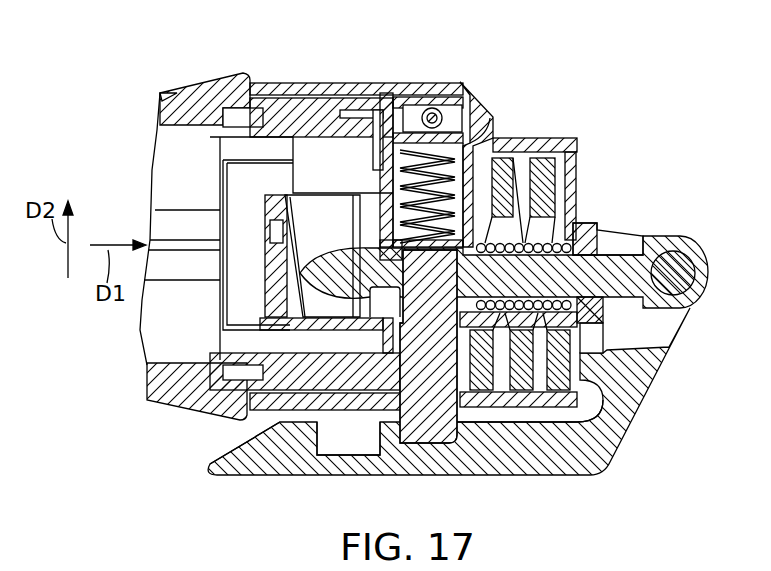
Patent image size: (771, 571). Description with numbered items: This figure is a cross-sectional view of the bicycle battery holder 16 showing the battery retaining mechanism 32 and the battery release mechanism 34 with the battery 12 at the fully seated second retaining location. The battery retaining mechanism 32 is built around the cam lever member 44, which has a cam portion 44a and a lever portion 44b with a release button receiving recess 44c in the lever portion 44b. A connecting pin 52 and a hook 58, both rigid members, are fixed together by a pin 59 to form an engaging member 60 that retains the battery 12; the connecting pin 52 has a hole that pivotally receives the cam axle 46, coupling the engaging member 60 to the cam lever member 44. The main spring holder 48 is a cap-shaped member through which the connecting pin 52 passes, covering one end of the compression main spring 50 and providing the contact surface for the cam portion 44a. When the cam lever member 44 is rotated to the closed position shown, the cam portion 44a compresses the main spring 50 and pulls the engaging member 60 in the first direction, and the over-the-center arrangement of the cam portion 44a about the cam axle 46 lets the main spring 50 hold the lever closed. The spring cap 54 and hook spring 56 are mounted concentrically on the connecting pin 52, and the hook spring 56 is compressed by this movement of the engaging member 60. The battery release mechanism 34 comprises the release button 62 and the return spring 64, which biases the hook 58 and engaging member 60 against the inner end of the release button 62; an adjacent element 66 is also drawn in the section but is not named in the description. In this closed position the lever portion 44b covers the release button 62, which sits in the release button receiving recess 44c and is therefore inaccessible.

The battery 12 is at (207, 70).
The bicycle battery holder 16 is at (560, 70).
The battery retaining mechanism 32 is at (621, 157).
The battery release mechanism 34 is at (378, 432).
The cam lever member 44 is at (617, 442).
The cam portion 44a is at (608, 226).
The lever portion 44b is at (240, 447).
The release button receiving recess 44c is at (482, 447).
The cam axle 46 is at (678, 279).
The main spring holder 48 is at (555, 150).
The main spring 50 is at (523, 156).
The connecting pin 52 is at (618, 275).
The spring cap 54 is at (590, 308).
The hook spring 56 is at (590, 333).
The hook 58 is at (325, 258).
The pin 59 is at (375, 255).
The engaging member 60 is at (370, 343).
The release button 62 is at (427, 432).
The return spring 64 is at (489, 118).
The retainer with spring 66 is at (410, 98).